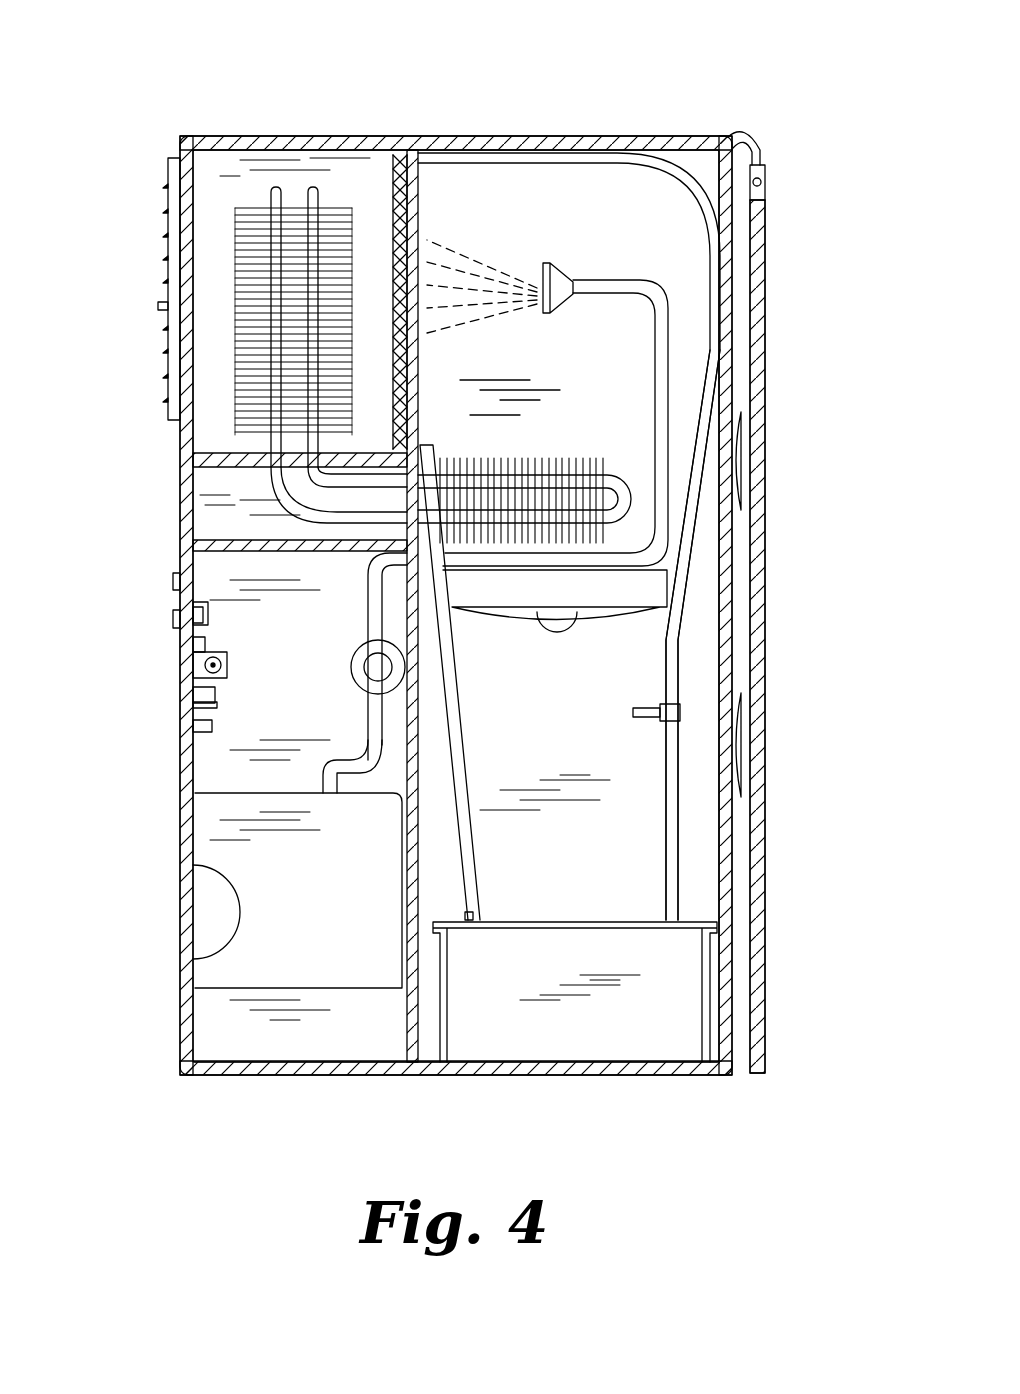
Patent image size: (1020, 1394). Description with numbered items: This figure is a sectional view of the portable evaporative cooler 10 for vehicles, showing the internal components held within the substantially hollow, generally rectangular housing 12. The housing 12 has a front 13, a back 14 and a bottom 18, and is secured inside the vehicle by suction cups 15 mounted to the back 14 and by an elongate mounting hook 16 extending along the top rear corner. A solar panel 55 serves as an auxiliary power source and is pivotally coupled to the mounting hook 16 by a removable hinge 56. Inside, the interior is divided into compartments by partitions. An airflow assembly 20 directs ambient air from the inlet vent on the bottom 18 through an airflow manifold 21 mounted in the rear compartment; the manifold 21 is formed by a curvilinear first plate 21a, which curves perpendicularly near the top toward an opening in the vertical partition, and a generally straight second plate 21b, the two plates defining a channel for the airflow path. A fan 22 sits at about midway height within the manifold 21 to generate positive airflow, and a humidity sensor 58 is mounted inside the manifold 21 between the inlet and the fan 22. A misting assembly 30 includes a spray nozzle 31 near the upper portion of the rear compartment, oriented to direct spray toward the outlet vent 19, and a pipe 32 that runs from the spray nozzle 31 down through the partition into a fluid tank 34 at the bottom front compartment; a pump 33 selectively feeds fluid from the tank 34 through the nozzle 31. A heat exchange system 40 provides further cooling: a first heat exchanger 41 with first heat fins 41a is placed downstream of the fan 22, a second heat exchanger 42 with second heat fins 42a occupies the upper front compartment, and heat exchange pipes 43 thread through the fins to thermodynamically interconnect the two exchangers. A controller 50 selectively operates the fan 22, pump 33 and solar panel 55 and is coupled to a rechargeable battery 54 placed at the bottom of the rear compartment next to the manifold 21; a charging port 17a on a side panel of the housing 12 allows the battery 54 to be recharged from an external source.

The portable evaporative cooler 10 is at (723, 78).
The housing 12 is at (198, 78).
The front 13 is at (185, 520).
The back 14 is at (738, 998).
The suction cups 15 is at (743, 460).
The mounting hook 16 is at (749, 133).
The charging port 17a is at (190, 665).
The bottom 18 is at (533, 1077).
The outlet vent 19 is at (152, 264).
The airflow assembly 20 is at (607, 833).
The airflow manifold 21 is at (687, 840).
The first plate 21a is at (672, 660).
The second plate 21b is at (466, 846).
The fan 22 is at (670, 580).
The misting assembly 30 is at (607, 235).
The spray nozzle 31 is at (560, 263).
The pipe 32 is at (370, 568).
The pump 33 is at (351, 672).
The fluid tank 34 is at (195, 790).
The heat exchange system 40 is at (367, 223).
The first heat exchanger 41 is at (549, 447).
The first heat fins 41a is at (590, 457).
The second heat exchanger 42 is at (222, 216).
The second heat fins 42a is at (235, 343).
The heat exchange pipes 43 is at (310, 185).
The controller 50 is at (135, 590).
The battery 54 is at (530, 964).
The solar panel 55 is at (767, 290).
The removable hinge 56 is at (777, 172).
The humidity sensor 58 is at (682, 710).